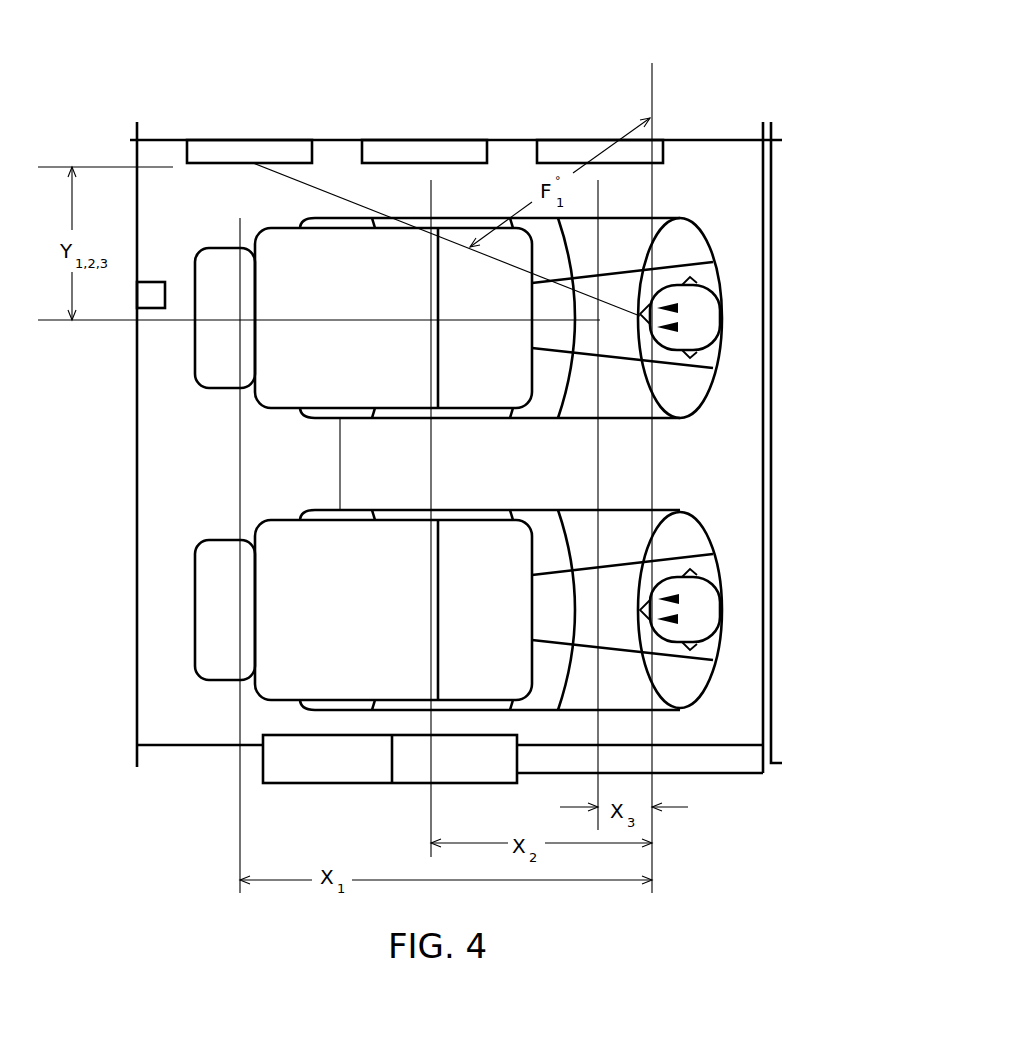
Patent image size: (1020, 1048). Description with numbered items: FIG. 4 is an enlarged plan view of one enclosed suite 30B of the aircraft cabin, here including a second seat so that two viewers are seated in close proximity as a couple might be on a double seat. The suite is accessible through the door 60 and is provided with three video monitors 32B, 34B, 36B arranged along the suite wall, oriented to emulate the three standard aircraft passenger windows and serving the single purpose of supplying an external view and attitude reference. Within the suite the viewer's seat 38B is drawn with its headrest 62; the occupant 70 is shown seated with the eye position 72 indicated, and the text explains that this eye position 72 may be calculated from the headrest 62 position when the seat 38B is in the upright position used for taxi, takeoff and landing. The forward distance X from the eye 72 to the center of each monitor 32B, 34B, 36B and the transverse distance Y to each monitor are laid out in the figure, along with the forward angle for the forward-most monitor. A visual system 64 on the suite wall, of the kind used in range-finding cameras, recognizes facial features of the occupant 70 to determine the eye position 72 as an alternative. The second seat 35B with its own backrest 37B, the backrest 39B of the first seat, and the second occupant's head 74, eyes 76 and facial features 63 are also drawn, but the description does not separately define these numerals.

The enclosed suite 30B is at (102, 619).
The video monitor 32B is at (300, 120).
The video monitor 34B is at (427, 103).
The video monitor 36B is at (553, 118).
The rear seat 35B is at (297, 680).
The rear seat backrest 37B is at (617, 627).
The viewer's seat 38B is at (288, 383).
The front seat backrest 39B is at (630, 237).
The door 60 is at (292, 768).
The headrest 62 is at (705, 287).
The rear occupant head features 63 is at (706, 648).
The visual system 64 is at (150, 300).
The occupant 70 is at (698, 337).
The eye position 72 is at (678, 327).
The rear occupant head 74 is at (702, 586).
The sound direction arrows 76 is at (679, 599).